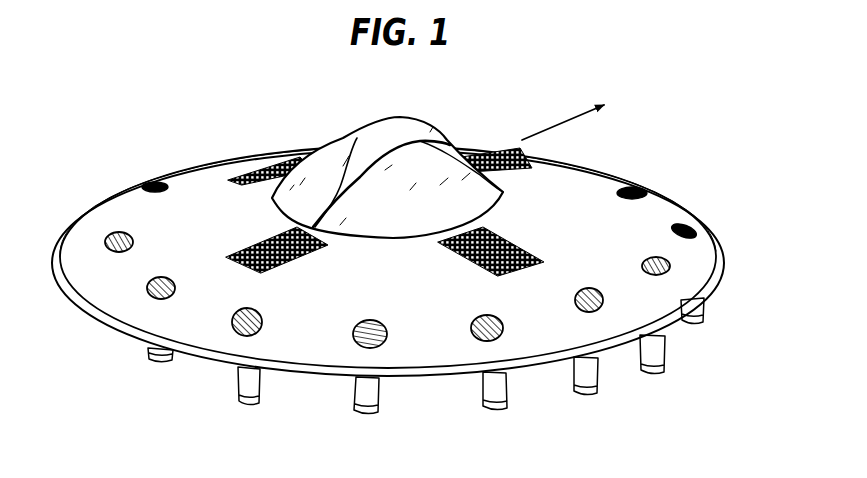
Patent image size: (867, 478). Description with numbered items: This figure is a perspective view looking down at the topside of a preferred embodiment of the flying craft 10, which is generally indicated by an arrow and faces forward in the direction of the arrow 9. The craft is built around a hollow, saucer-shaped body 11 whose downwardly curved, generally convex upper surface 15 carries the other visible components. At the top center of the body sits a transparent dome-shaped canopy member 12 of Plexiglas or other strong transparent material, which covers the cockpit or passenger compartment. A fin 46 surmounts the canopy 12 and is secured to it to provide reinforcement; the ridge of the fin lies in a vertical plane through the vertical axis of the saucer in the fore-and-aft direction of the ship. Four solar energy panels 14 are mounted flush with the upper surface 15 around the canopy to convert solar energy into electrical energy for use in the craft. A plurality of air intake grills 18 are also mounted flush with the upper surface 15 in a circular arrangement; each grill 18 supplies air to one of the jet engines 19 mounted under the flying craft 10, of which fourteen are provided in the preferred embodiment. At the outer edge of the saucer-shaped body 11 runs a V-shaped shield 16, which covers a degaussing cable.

The arrow 9 is at (562, 118).
The flying craft 10 is at (406, 249).
The saucer-shaped body 11 is at (670, 212).
The dome-shaped canopy member 12 is at (353, 150).
The solar energy panels 14 is at (252, 165).
The upper surface 15 is at (700, 256).
The V-shaped shield 16 is at (718, 278).
The air intake grills 18 is at (155, 192).
The jet engines 19 is at (238, 393).
The fin 46 is at (407, 125).